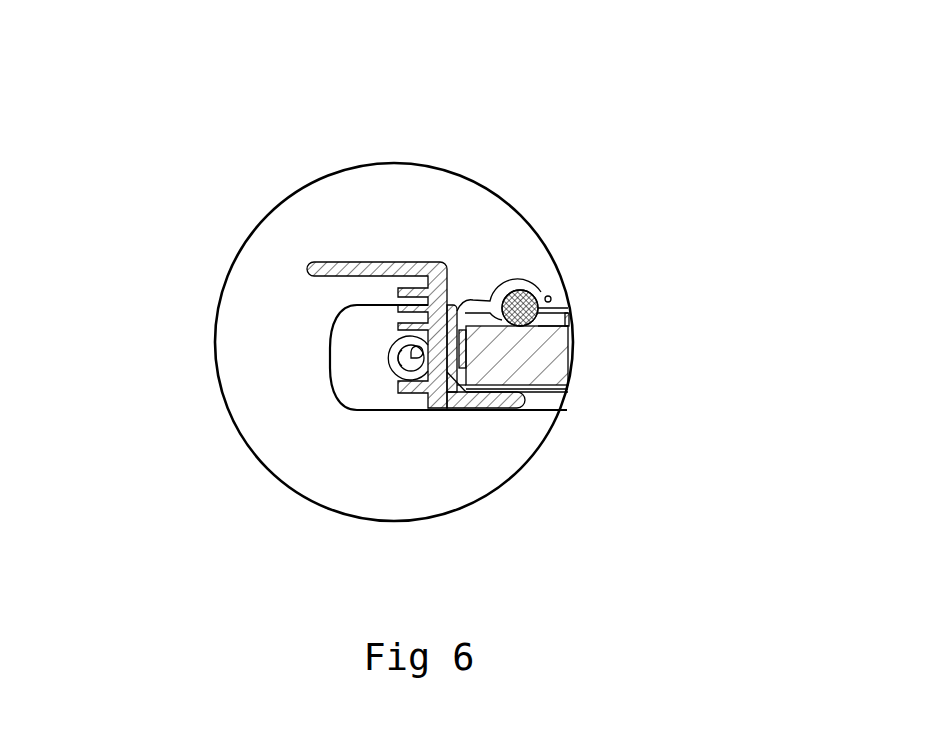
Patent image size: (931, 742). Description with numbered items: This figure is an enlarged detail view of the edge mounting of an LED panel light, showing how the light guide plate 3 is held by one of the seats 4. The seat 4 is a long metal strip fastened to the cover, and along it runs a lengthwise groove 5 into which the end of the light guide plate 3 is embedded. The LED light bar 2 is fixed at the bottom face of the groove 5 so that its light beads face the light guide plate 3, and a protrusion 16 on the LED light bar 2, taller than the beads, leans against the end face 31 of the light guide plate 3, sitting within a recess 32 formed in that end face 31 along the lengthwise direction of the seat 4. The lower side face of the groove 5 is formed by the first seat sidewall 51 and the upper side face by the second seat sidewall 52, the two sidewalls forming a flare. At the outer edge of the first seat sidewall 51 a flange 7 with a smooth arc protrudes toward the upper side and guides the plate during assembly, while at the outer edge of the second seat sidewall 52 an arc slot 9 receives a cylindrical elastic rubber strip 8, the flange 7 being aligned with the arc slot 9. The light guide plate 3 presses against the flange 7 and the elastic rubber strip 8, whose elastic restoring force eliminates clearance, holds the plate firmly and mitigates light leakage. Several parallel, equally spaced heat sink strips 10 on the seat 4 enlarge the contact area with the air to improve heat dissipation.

The LED light bar 2 is at (448, 297).
The light guide plate 3 is at (553, 363).
The seat 4 is at (352, 262).
The groove 5 is at (563, 306).
The flange 7 is at (545, 386).
The elastic rubber strip 8 is at (541, 299).
The arc slot 9 is at (535, 278).
The heat sink strip 10 is at (400, 300).
The protrusion 16 is at (465, 303).
The end face 31 is at (464, 392).
The recess 32 is at (450, 386).
The first seat sidewall 51 is at (485, 406).
The second seat sidewall 52 is at (497, 282).